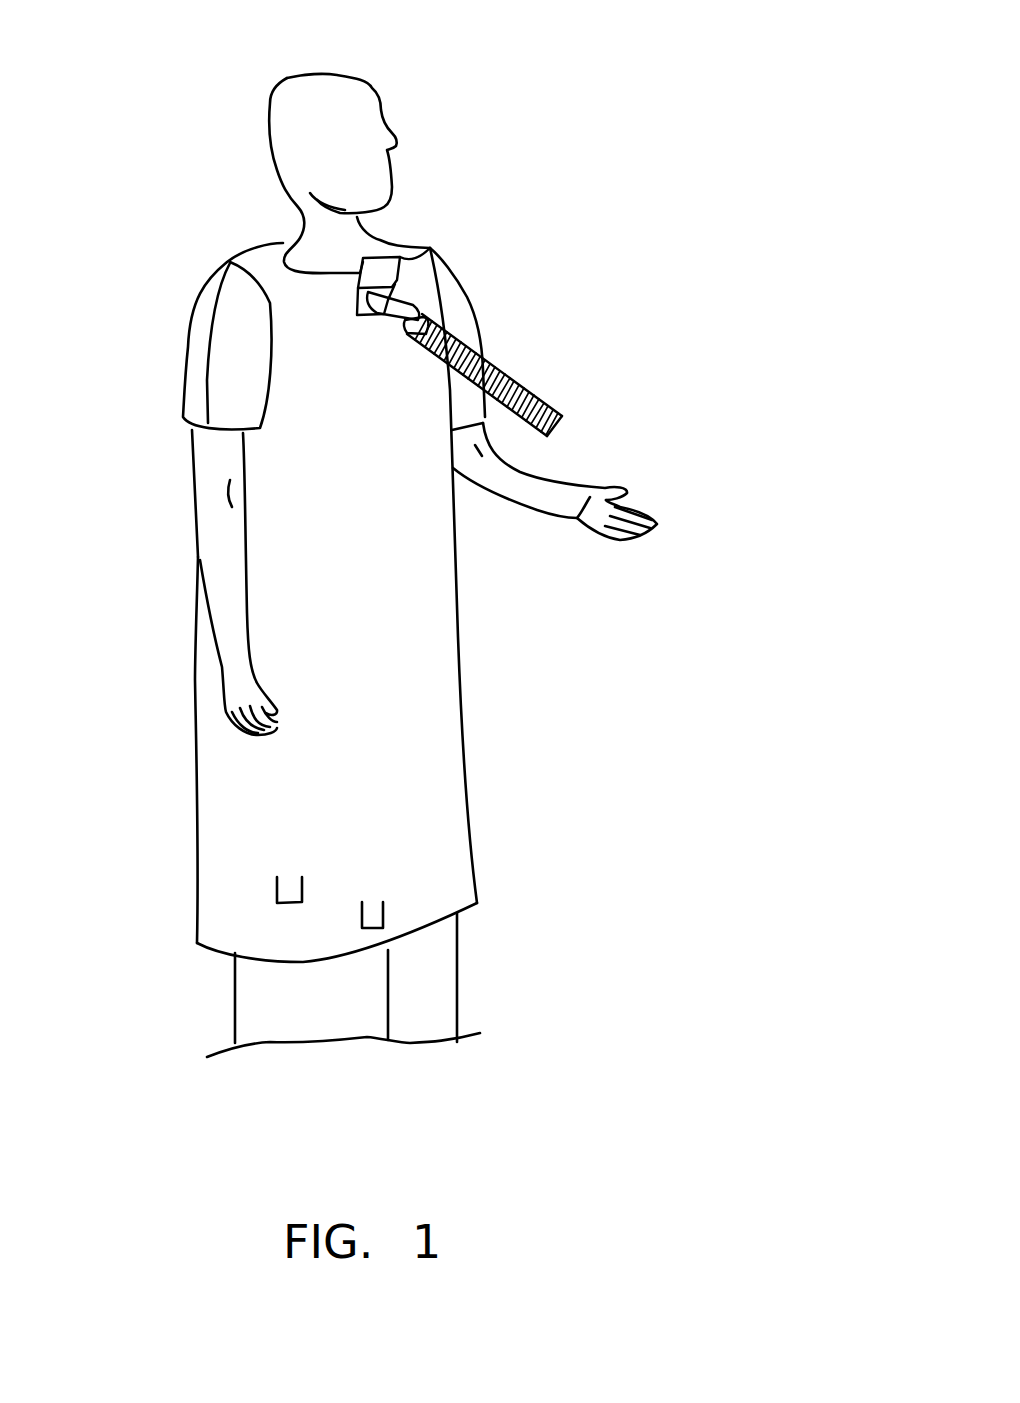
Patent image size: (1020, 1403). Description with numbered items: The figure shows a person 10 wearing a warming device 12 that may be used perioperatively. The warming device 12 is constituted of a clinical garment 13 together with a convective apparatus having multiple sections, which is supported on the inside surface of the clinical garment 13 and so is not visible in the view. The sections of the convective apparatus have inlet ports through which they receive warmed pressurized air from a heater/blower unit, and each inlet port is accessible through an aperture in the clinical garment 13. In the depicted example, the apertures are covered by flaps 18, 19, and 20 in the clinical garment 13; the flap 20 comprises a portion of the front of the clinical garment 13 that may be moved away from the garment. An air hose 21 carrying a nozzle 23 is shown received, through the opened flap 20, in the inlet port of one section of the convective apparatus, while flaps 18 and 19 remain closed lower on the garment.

The person 10 is at (477, 92).
The warming device 12 is at (195, 218).
The clinical garment 13 is at (460, 611).
The flap 18 is at (277, 888).
The flap 19 is at (385, 915).
The flap 20 is at (427, 249).
The air hose 21 is at (497, 378).
The nozzle 23 is at (405, 297).